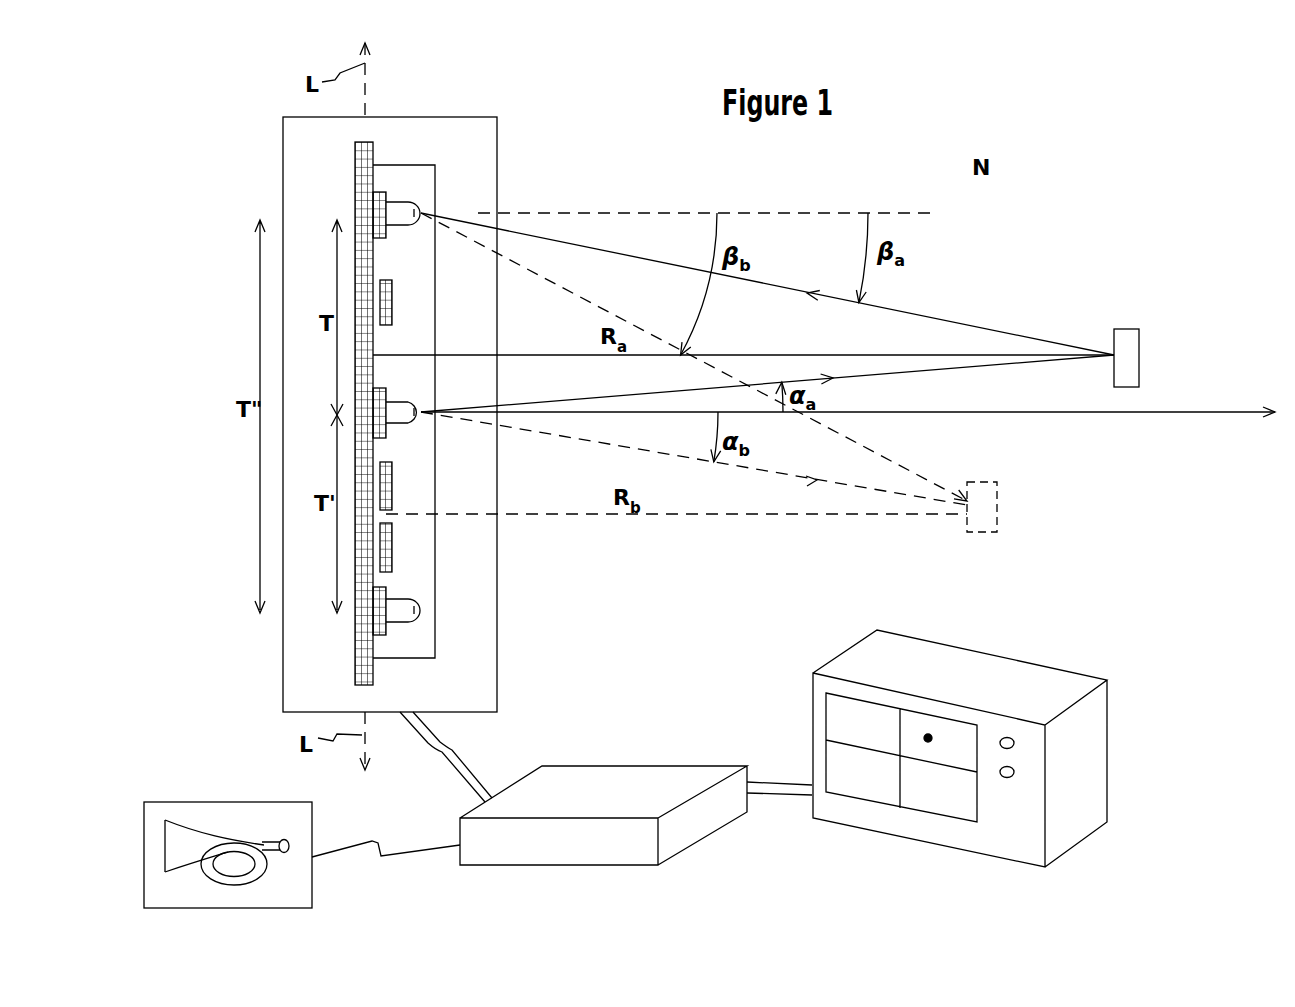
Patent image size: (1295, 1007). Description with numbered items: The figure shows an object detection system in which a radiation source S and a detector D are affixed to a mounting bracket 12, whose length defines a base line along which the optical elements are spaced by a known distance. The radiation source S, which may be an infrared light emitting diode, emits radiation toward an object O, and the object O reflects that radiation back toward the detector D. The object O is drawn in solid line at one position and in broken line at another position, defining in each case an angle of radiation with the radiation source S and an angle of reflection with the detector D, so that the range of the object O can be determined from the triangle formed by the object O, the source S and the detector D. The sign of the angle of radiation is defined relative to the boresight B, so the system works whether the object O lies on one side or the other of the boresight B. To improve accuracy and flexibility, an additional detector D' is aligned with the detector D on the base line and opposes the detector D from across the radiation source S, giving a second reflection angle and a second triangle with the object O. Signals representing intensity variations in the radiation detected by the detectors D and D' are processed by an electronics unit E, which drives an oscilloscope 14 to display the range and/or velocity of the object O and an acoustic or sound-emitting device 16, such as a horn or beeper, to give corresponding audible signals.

The mounting bracket 12 is at (355, 172).
The oscilloscope 14 is at (995, 657).
The acoustic or sound-emitting device 16 is at (192, 802).
The detector D is at (426, 182).
The additional detector D' is at (416, 653).
The radiation source S is at (432, 404).
The object O is at (1141, 352).
The boresight B is at (1197, 417).
The electronics unit E is at (630, 766).